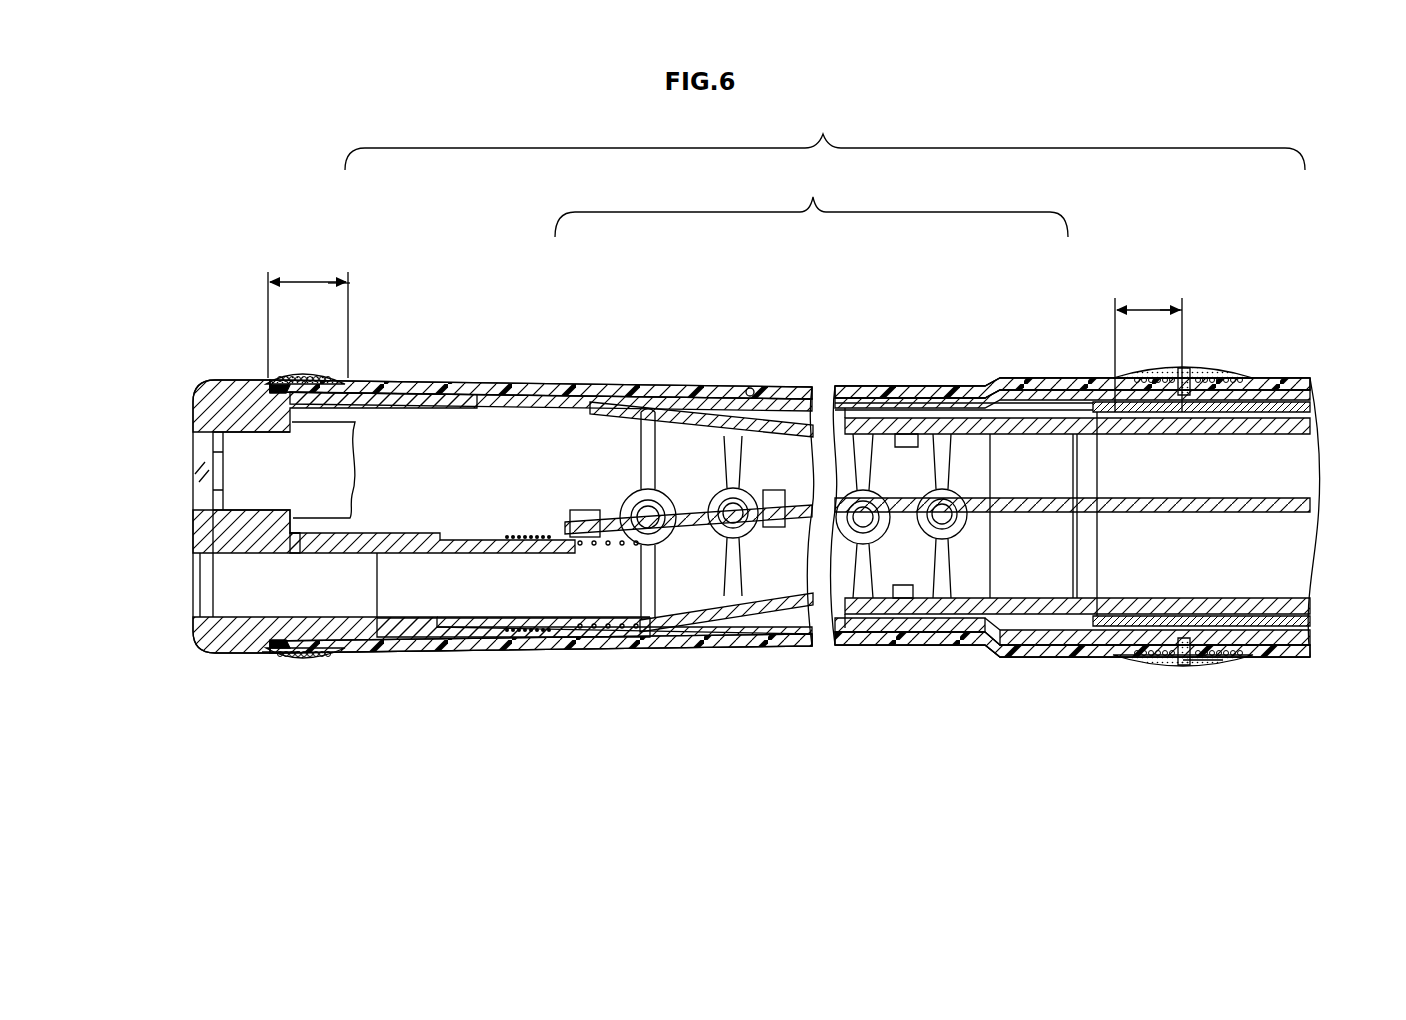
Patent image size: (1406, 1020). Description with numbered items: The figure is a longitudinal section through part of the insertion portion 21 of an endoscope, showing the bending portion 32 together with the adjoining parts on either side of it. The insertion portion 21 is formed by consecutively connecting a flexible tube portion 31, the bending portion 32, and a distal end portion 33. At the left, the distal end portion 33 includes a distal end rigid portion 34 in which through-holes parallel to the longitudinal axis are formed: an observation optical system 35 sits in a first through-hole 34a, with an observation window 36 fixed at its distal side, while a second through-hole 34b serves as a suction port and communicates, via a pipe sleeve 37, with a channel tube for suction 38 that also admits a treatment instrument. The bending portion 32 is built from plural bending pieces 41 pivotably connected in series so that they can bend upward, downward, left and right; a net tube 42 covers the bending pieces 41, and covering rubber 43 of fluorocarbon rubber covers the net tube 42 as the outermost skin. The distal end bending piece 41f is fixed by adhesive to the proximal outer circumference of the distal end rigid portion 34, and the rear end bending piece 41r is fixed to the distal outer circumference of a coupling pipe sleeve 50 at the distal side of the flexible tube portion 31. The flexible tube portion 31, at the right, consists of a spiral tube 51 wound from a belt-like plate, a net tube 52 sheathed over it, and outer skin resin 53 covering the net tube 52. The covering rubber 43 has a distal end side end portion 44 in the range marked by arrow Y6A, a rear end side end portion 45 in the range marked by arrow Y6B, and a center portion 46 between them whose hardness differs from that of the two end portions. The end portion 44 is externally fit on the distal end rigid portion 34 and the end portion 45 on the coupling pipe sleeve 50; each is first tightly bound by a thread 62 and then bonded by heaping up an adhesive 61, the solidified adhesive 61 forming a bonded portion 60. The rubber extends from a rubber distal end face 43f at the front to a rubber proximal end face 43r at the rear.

The insertion portion 21 is at (825, 135).
The flexible tube portion 31 is at (1272, 356).
The bending portion 32 is at (811, 203).
The distal end portion 33 is at (373, 346).
The distal end rigid portion 34 is at (231, 372).
The first through-hole 34a is at (256, 434).
The second through-hole 34b is at (246, 562).
The observation optical system 35 is at (368, 436).
The observation window 36 is at (200, 453).
The pipe sleeve 37 is at (458, 620).
The channel tube for suction 38 is at (566, 640).
The bending pieces 41 is at (713, 380).
The distal end bending piece 41f is at (583, 380).
The rear end bending piece 41r is at (1023, 380).
The net tube 42 is at (962, 380).
The covering rubber 43 is at (641, 380).
The rubber distal end face 43f is at (270, 652).
The rubber proximal end face 43r is at (1192, 660).
The distal end side end portion 44 is at (308, 317).
The rear end side end portion 45 is at (1148, 347).
The center portion 46 is at (750, 366).
The coupling pipe sleeve 50 is at (1102, 378).
The spiral tube 51 is at (1180, 398).
The net tube 52 is at (1273, 405).
The outer skin resin 53 is at (1300, 378).
The bonded portion 60 is at (303, 672).
The adhesive 61 is at (333, 378).
The thread 62 is at (298, 378).
The arrow Y6A is at (329, 283).
The arrow Y6B is at (1163, 310).